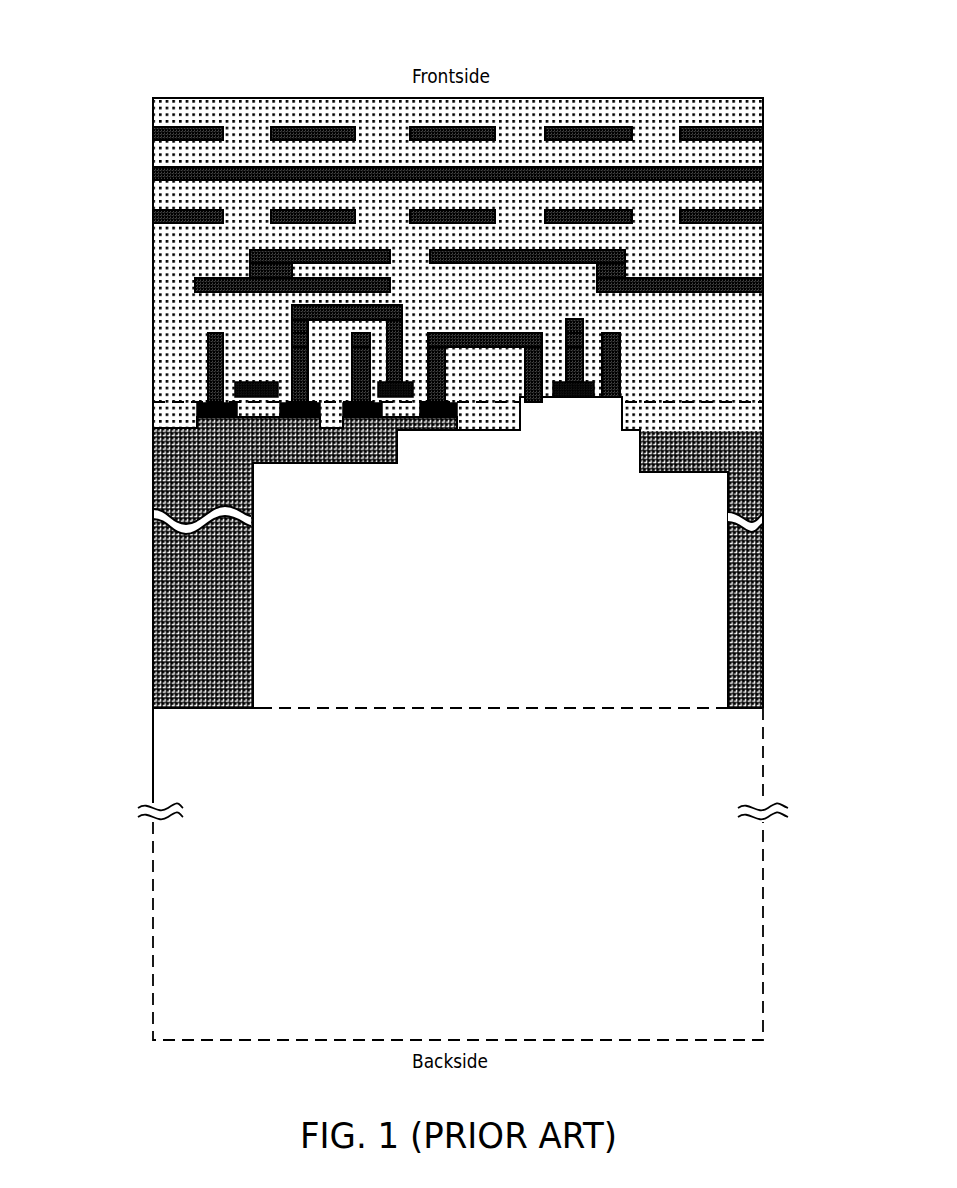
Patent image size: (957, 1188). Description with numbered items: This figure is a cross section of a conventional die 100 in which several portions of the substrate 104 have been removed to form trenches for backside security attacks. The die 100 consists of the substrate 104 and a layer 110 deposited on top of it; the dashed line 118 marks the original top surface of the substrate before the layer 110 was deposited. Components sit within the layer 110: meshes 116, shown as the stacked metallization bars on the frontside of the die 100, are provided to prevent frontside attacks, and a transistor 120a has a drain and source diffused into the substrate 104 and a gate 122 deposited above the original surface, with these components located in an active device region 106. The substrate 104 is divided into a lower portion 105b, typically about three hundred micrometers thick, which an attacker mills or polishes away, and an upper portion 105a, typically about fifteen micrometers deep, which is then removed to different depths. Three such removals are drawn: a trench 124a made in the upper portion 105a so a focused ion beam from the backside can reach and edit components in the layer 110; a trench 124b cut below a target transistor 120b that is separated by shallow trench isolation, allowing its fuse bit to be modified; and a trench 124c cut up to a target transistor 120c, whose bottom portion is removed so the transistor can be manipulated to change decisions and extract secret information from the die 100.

The die 100 is at (70, 51).
The substrate 104 is at (792, 402).
The upper portion of the substrate 105a is at (141, 404).
The lower portion of the substrate 105b is at (141, 710).
The active device region 106 is at (141, 393).
The layer 110 is at (141, 98).
The meshes 116 is at (723, 130).
The line 118 is at (733, 401).
The transistor 120a is at (200, 360).
The target transistor 120b is at (408, 350).
The target transistor 120c is at (626, 364).
The gate 122 is at (258, 396).
The trench 124a is at (392, 551).
The trench 124b is at (517, 551).
The trench 124c is at (625, 551).